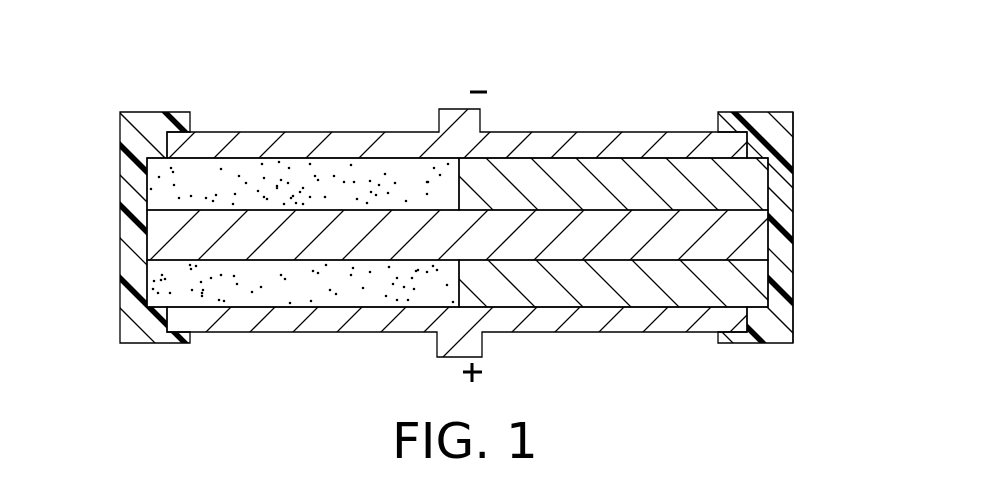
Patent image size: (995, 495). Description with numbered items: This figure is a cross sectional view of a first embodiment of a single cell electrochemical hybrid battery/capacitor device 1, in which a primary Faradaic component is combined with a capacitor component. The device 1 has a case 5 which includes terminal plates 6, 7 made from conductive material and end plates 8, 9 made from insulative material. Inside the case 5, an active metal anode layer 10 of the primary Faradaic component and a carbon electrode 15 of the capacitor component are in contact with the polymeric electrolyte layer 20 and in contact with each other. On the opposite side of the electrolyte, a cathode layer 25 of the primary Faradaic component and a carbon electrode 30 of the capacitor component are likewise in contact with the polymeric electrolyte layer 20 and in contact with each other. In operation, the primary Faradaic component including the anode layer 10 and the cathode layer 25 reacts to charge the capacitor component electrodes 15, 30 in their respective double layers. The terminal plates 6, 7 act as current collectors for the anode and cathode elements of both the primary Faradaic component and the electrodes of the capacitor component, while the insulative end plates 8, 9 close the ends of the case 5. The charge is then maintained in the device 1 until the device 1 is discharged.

The hybrid battery/capacitor device 1 is at (616, 102).
The case 5 is at (800, 150).
The terminal plate 6 is at (288, 143).
The terminal plate 7 is at (252, 323).
The end plate 8 is at (795, 232).
The end plate 9 is at (125, 275).
The active metal anode layer 10 is at (558, 170).
The carbon electrode 15 is at (388, 172).
The polymeric electrolyte layer 20 is at (613, 248).
The cathode layer 25 is at (695, 295).
The carbon electrode 30 is at (320, 290).